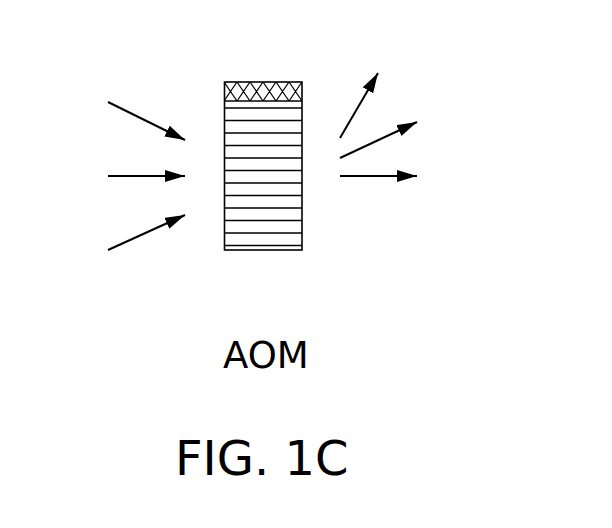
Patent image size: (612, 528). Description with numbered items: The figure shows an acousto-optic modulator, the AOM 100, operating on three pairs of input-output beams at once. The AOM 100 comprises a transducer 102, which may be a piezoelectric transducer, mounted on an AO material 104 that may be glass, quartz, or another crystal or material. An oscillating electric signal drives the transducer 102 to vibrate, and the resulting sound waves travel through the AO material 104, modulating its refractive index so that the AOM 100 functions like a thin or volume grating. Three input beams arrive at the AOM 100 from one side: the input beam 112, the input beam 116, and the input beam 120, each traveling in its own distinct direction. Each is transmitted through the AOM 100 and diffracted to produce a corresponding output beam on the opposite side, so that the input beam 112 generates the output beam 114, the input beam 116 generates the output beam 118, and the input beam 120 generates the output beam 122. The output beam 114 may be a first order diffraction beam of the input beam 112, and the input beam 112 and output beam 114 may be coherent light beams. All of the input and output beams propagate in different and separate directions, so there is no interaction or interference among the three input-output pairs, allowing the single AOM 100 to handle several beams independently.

The AOM 100 is at (265, 254).
The transducer 102 is at (262, 82).
The AO material 104 is at (302, 247).
The input beam 112 is at (135, 175).
The output beam 114 is at (378, 140).
The input beam 116 is at (128, 112).
The output beam 118 is at (358, 177).
The input beam 120 is at (130, 240).
The output beam 122 is at (358, 107).